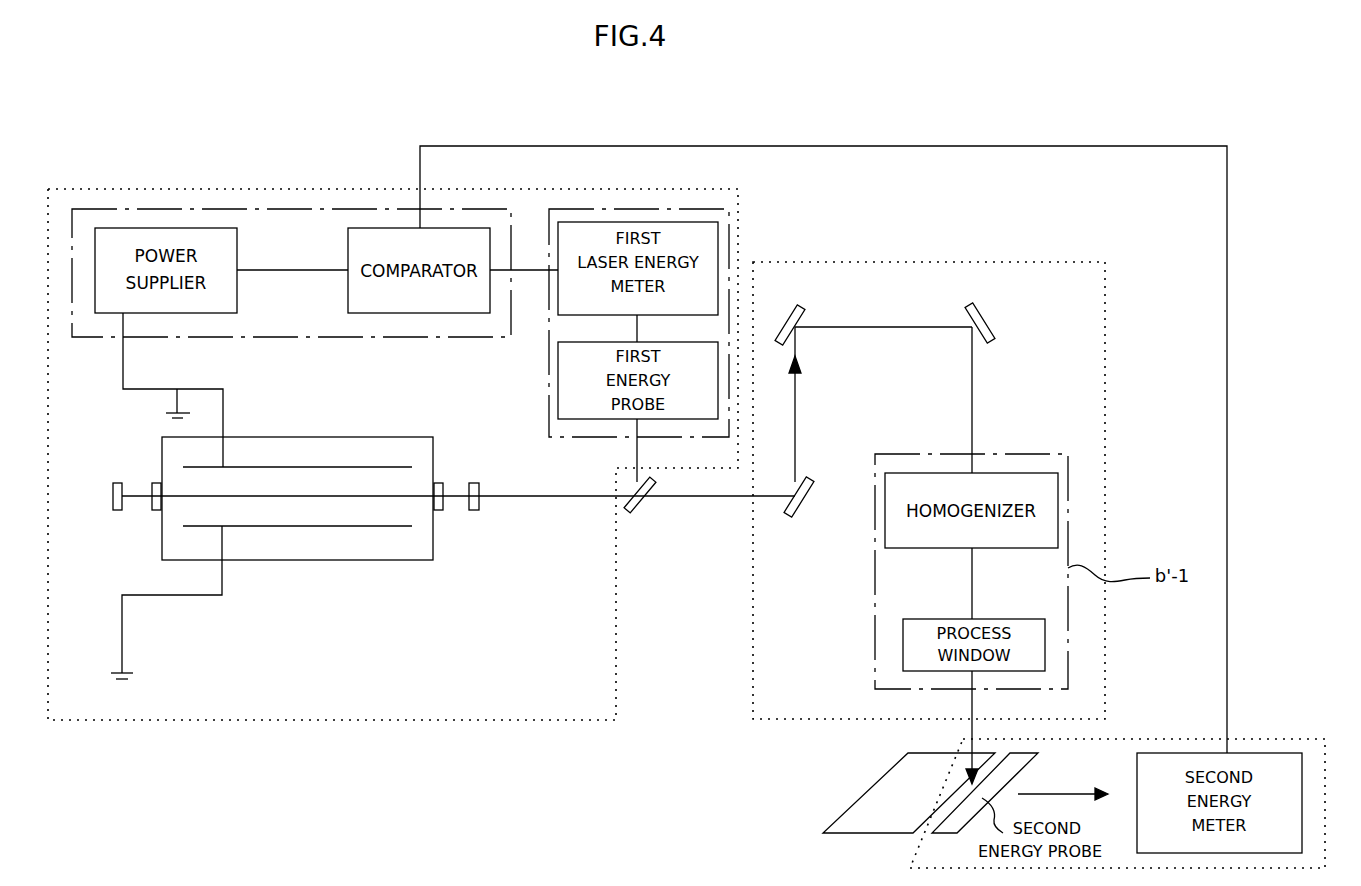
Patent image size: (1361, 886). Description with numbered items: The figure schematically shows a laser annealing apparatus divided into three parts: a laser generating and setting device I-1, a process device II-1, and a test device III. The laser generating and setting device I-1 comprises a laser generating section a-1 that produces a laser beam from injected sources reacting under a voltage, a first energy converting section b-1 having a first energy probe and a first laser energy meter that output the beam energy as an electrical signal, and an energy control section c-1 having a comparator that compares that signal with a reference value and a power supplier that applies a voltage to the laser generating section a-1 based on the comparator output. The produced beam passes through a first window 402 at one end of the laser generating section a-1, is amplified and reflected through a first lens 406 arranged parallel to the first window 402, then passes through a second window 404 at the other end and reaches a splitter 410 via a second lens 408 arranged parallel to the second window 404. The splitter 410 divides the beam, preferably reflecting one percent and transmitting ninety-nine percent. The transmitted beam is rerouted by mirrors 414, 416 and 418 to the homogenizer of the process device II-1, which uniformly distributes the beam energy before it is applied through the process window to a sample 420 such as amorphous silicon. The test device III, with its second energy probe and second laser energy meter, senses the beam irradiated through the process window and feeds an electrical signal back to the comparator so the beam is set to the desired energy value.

The first window 402 is at (152, 488).
The second window 404 is at (438, 483).
The first lens 406 is at (113, 496).
The second lens 408 is at (478, 483).
The splitter 410 is at (650, 503).
The mirror 414 is at (805, 498).
The mirror 416 is at (800, 302).
The mirror 418 is at (987, 318).
The sample 420 is at (870, 802).
The laser generating section a-1 is at (342, 560).
The first energy converting section b-1 is at (730, 230).
The energy control section c-1 is at (303, 337).
The laser generating and setting device I-1 is at (370, 720).
The process device II-1 is at (1105, 426).
The test device III is at (1260, 739).